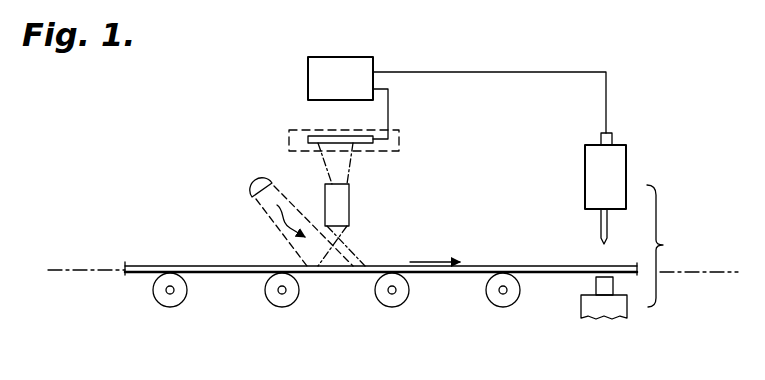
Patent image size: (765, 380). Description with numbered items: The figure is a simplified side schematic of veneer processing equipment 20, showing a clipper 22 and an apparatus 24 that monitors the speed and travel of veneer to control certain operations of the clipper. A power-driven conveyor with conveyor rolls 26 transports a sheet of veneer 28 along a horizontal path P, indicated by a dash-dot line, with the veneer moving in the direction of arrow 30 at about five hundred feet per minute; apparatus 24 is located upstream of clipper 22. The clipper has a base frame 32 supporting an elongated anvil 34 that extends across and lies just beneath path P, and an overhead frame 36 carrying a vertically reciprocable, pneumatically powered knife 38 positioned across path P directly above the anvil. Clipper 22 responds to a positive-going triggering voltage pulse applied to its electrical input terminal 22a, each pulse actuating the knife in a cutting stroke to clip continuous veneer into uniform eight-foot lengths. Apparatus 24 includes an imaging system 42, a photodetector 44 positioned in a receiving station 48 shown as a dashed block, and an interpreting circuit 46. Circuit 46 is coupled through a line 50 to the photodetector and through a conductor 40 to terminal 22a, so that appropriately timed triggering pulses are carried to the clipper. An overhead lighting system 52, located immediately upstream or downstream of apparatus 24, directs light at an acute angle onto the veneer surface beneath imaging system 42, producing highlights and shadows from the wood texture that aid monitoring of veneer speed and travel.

The veneer processing equipment 20 is at (155, 136).
The clipper 22 is at (653, 139).
The electrical input terminal 22a is at (601, 137).
The apparatus 24 is at (266, 110).
The conveyor rolls 26 is at (183, 304).
The sheet of veneer 28 is at (202, 265).
The direction arrow 30 is at (427, 262).
The base frame 32 is at (627, 315).
The anvil 34 is at (596, 287).
The overhead frame 36 is at (585, 174).
The knife 38 is at (601, 233).
The conductor 40 is at (482, 72).
The imaging system 42 is at (350, 200).
The photodetector 44 is at (328, 136).
The interpreting circuit 46 is at (327, 57).
The receiving station 48 is at (377, 152).
The line 50 is at (388, 103).
The overhead lighting system 52 is at (255, 177).
The path P is at (87, 268).